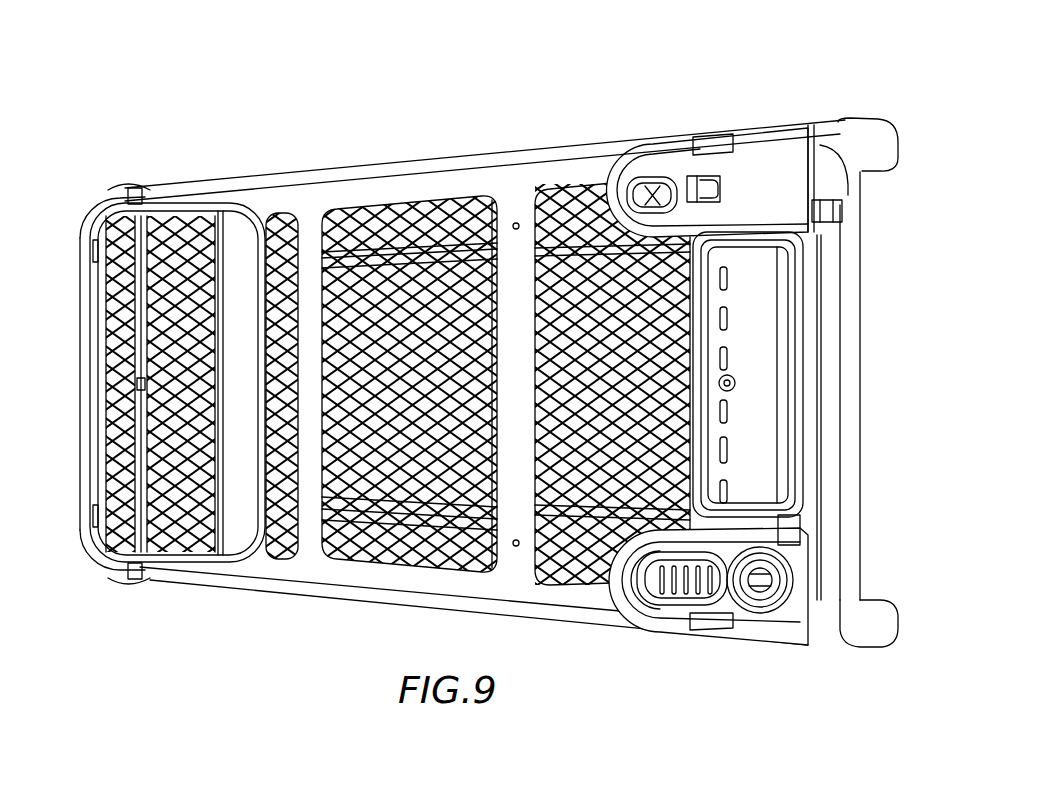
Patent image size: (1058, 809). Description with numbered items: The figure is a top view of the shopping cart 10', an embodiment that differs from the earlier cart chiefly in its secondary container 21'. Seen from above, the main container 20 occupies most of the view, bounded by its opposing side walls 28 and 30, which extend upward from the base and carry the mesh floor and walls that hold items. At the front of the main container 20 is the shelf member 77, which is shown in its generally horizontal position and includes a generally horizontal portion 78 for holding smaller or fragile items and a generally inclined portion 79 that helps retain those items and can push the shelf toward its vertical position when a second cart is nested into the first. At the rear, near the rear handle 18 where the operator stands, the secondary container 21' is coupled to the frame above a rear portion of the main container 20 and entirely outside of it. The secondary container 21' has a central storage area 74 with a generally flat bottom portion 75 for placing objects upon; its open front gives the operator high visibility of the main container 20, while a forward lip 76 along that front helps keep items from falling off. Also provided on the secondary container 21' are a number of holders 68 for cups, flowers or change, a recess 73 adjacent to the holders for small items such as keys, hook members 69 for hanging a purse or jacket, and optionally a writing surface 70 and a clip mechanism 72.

The shopping cart 10' is at (476, 353).
The main container 20 is at (248, 142).
The secondary container 21' is at (756, 353).
The side wall 28 is at (373, 165).
The side wall 30 is at (272, 593).
The inclined portion 79 is at (240, 227).
The horizontal portion 78 is at (140, 287).
The shelf member 77 is at (153, 393).
The writing surface 70 is at (765, 160).
The clip mechanism 72 is at (712, 203).
The hook member 69 is at (815, 212).
The rear handle 18 is at (858, 335).
The forward lip 76 is at (693, 338).
The central storage area 74 is at (762, 392).
The bottom portion 75 is at (757, 437).
The recess 73 is at (678, 595).
The holder 68 is at (763, 600).